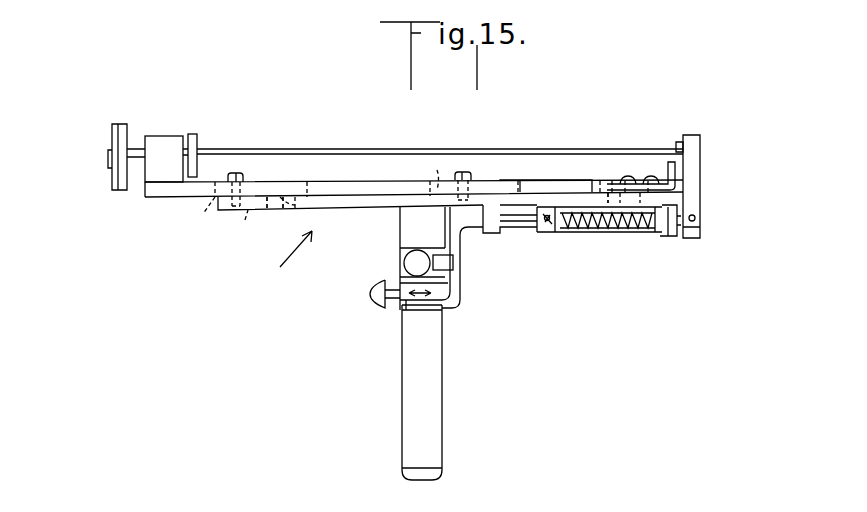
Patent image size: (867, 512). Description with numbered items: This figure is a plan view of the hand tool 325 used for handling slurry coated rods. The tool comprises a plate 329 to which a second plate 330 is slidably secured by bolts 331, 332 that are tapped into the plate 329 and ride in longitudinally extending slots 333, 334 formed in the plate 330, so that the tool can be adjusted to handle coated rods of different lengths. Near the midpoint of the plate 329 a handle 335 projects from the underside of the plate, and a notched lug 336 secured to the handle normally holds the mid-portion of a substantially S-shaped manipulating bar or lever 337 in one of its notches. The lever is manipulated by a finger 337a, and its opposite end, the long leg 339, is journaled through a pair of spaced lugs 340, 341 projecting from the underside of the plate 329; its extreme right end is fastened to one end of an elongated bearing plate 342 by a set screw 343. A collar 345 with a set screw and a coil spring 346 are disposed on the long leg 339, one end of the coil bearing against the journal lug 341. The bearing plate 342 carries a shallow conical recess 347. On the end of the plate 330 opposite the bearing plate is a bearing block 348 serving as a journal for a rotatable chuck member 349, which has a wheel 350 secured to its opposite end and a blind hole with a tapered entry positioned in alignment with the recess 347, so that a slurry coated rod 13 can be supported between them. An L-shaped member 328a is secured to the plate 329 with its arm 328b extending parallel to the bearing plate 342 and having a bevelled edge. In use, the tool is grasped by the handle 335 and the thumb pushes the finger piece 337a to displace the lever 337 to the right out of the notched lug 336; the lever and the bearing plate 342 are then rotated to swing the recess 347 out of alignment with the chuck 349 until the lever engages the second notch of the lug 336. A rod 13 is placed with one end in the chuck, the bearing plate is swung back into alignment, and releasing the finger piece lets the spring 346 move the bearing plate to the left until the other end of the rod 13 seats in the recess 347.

The slurry coated rod 13 is at (348, 150).
The tool 325 is at (278, 261).
The L-shaped member 328a is at (627, 176).
The arm 328b is at (676, 170).
The plate 329 is at (330, 203).
The second plate 330 is at (318, 182).
The bolt 331 is at (240, 174).
The bolt 332 is at (471, 175).
The slot 333 is at (203, 216).
The slot 334 is at (437, 176).
The handle 335 is at (428, 382).
The notched lug 336 is at (453, 263).
The manipulating bar 337 is at (406, 305).
The finger 337a is at (372, 292).
The long leg 339 is at (528, 190).
The lug 340 is at (497, 234).
The journal lug 341 is at (672, 236).
The bearing plate 342 is at (701, 185).
The set screw 343 is at (696, 218).
The collar 345 is at (552, 233).
The coil spring 346 is at (622, 232).
The shallow conical recess 347 is at (700, 150).
The bearing block 348 is at (163, 136).
The chuck member 349 is at (197, 140).
The wheel 350 is at (118, 168).